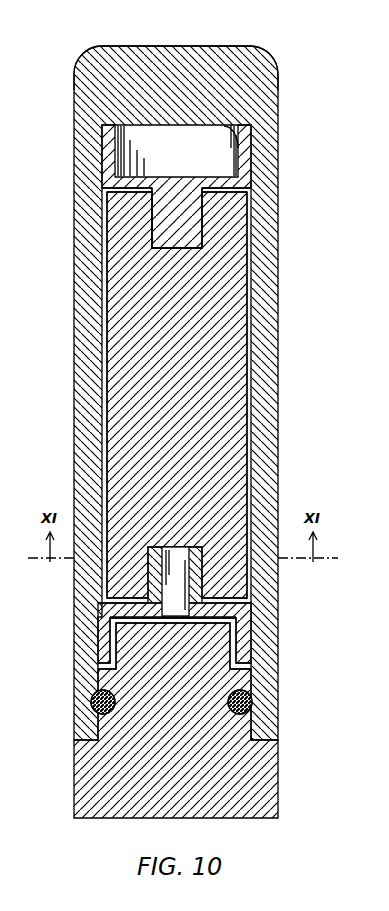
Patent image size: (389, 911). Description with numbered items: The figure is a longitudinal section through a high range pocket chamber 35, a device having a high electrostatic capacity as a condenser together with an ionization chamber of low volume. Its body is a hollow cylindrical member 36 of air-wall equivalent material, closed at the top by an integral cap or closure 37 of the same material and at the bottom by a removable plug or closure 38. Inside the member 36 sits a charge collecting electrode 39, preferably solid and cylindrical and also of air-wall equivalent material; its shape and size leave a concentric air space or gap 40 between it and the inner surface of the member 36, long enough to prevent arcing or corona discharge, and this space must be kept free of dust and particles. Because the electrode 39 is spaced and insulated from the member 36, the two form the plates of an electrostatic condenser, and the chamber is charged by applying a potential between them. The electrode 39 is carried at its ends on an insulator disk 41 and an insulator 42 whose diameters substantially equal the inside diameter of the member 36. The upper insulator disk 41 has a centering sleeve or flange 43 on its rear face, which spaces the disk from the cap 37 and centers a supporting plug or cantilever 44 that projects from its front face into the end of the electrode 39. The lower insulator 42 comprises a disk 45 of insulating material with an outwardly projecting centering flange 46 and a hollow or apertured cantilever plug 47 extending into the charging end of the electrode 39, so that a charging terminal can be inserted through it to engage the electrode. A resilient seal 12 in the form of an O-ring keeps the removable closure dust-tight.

The resilient seal 12 is at (252, 700).
The high range pocket chamber 35 is at (328, 382).
The hollow cylindrical member 36 is at (278, 418).
The integral cap or closure 37 is at (194, 46).
The removable plug or closure 38 is at (278, 775).
The charge collecting electrode 39 is at (235, 358).
The concentric air space or gap 40 is at (232, 191).
The insulator disk 41 is at (220, 176).
The insulator 42 is at (251, 633).
The centering sleeve or flange 43 is at (232, 130).
The supporting plug or cantilever 44 is at (196, 228).
The disk 45 is at (122, 607).
The centering flange 46 is at (98, 648).
The hollow or apertured cantilever plug 47 is at (148, 572).